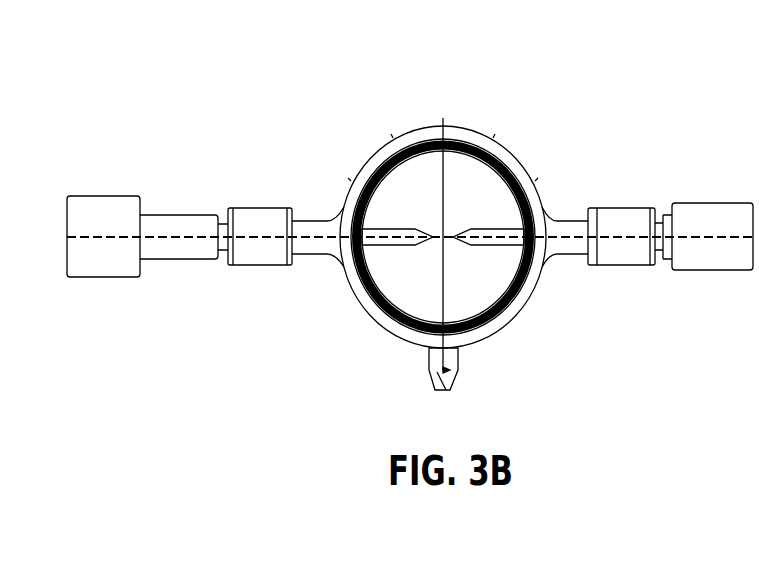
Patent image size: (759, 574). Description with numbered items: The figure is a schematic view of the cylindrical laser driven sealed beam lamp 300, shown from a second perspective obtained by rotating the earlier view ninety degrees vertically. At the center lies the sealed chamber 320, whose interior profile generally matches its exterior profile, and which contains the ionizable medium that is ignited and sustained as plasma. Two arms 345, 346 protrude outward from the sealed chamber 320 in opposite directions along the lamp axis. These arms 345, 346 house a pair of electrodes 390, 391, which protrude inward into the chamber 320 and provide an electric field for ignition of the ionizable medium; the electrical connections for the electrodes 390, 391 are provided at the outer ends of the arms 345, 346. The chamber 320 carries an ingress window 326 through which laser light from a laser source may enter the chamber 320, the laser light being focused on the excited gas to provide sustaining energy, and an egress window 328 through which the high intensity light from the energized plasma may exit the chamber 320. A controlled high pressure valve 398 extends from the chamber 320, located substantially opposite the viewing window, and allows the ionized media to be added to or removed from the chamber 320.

The cylindrical lamp 300 is at (611, 60).
The sealed chamber 320 is at (353, 135).
The ingress window 326 is at (284, 167).
The egress window 328 is at (447, 100).
The arm 345 is at (178, 302).
The arm 346 is at (652, 312).
The electrode 390 is at (398, 247).
The electrode 391 is at (487, 247).
The controlled high pressure valve 398 is at (427, 360).